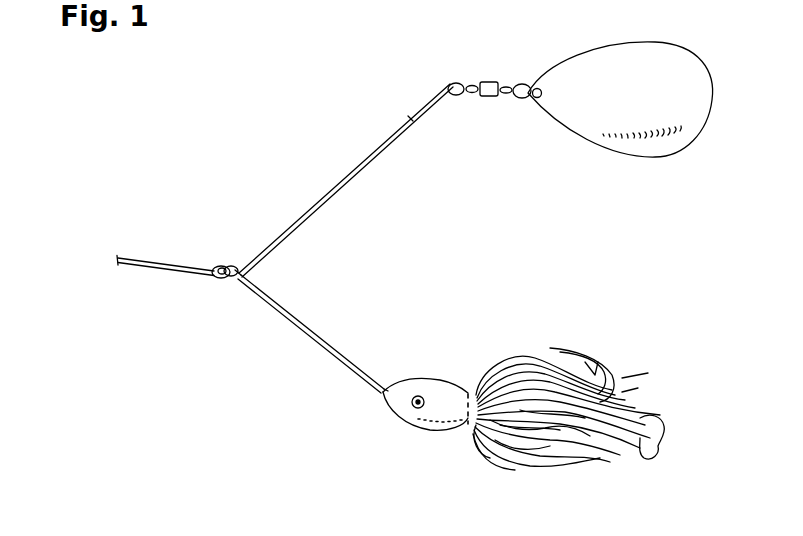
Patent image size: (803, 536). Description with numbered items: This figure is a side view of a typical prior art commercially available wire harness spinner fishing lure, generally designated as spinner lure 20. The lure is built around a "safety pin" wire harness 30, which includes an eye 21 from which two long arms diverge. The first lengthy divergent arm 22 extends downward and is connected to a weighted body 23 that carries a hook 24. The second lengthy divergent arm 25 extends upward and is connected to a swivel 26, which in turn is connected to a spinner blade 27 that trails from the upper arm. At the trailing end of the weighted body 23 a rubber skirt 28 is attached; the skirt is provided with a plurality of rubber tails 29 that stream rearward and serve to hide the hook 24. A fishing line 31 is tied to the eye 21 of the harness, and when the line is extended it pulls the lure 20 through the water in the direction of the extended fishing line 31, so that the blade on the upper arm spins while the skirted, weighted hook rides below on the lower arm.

The spinner lure 20 is at (305, 162).
The eye 21 is at (220, 279).
The first lengthy divergent arm 22 is at (357, 368).
The weighted body 23 is at (460, 415).
The hook 24 is at (620, 383).
The second lengthy divergent arm 25 is at (410, 119).
The swivel 26 is at (491, 97).
The spinner blade 27 is at (648, 103).
The rubber skirt 28 is at (470, 387).
The rubber tails 29 is at (650, 438).
The safety pin wire harness 30 is at (309, 217).
The fishing line 31 is at (131, 271).